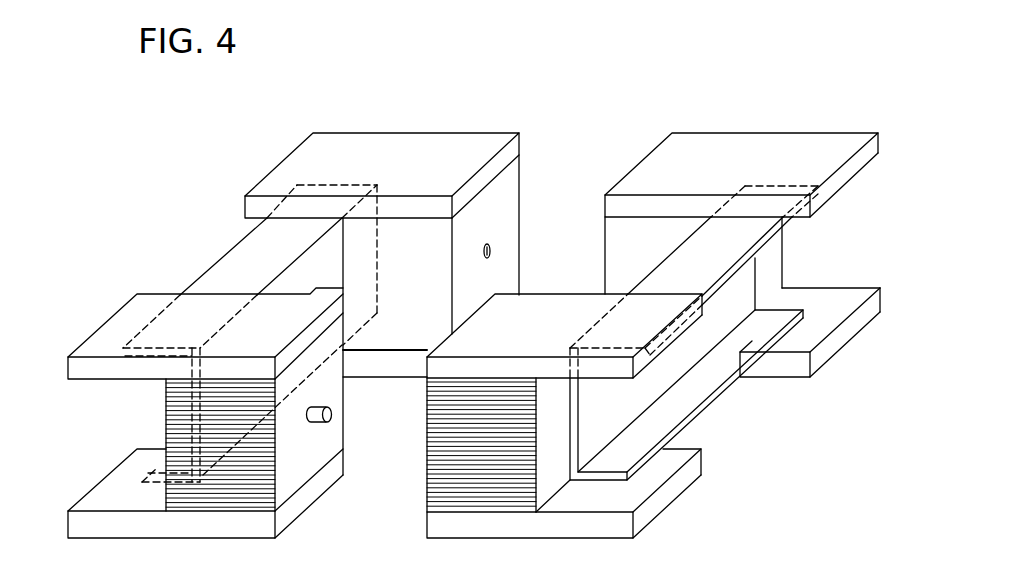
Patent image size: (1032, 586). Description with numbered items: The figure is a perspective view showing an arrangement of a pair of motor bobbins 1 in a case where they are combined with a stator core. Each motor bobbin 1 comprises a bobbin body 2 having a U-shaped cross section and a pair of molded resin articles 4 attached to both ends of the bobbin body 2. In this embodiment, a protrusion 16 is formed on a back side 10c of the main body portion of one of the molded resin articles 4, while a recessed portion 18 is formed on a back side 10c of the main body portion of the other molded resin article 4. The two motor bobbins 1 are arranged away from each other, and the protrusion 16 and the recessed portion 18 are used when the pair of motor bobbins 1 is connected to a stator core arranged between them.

The motor bobbin 1 is at (204, 153).
The bobbin body 2 is at (245, 266).
The molded resin article 4 is at (360, 148).
The back side 10c is at (510, 180).
The protrusion 16 is at (316, 421).
The recessed portion 18 is at (490, 249).